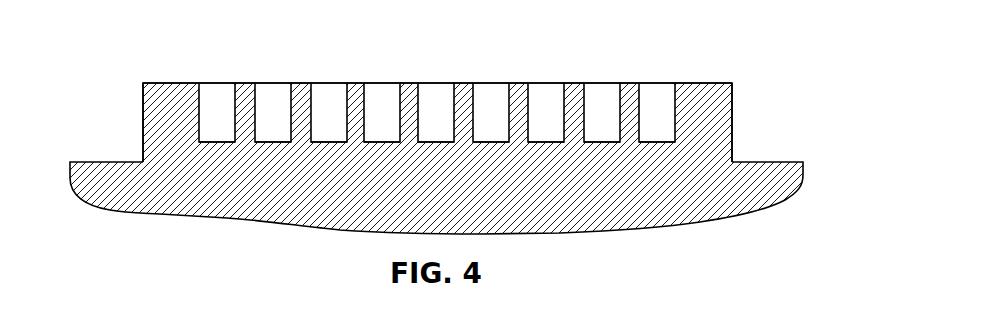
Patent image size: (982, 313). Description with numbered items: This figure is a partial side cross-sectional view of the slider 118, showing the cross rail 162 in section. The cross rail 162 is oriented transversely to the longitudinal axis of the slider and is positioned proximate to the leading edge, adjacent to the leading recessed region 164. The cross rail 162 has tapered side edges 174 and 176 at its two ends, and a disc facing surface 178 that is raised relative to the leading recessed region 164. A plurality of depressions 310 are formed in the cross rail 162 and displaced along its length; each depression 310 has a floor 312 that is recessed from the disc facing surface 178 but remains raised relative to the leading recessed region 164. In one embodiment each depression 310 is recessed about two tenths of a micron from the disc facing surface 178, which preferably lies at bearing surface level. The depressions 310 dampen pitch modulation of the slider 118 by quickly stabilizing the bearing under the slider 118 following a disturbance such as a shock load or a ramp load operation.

The slider 118 is at (652, 53).
The cross rail 162 is at (692, 82).
The leading recessed region 164 is at (101, 161).
The tapered side edge 174 is at (732, 127).
The tapered side edge 176 is at (143, 112).
The disc facing surface 178 is at (147, 82).
The depression 310 is at (276, 89).
The floor 312 is at (272, 141).